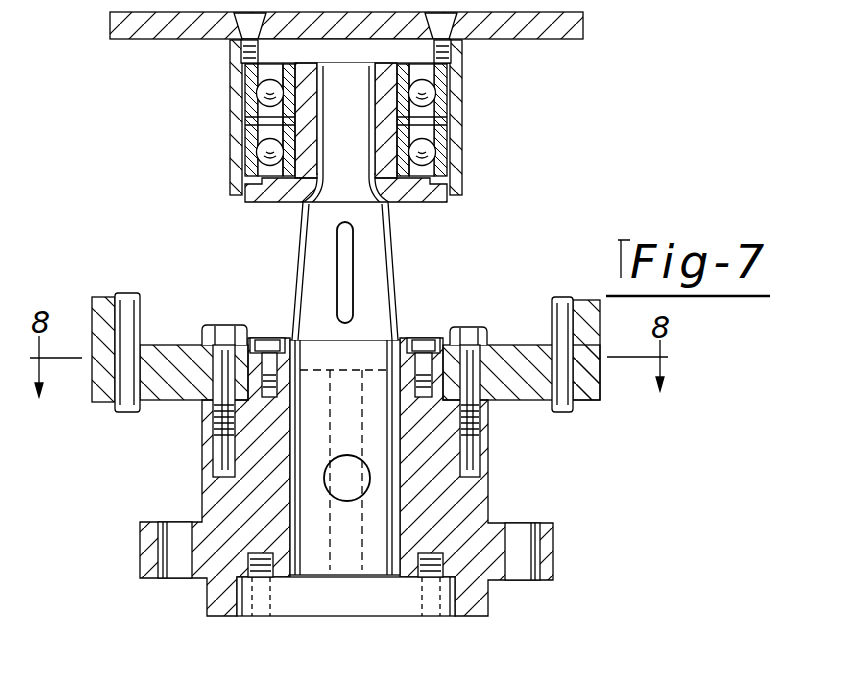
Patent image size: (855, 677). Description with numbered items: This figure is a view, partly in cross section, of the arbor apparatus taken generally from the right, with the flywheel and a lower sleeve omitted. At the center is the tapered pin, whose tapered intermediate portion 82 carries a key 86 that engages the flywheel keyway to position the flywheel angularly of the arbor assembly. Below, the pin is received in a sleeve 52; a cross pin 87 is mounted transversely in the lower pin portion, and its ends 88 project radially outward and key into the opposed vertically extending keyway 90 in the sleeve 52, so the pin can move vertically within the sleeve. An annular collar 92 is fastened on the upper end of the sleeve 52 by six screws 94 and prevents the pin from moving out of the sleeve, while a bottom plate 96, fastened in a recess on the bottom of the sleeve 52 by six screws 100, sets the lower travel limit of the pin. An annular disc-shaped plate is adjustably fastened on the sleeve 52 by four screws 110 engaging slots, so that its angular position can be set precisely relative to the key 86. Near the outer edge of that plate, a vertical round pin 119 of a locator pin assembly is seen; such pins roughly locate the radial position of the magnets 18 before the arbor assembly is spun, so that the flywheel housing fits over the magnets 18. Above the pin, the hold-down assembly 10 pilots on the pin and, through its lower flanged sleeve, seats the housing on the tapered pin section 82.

The bearing housing assembly 10 is at (524, 88).
The magnets 18 is at (93, 297).
The sleeve 52 is at (482, 503).
The tapered intermediate portion 82 is at (300, 265).
The key 86 is at (350, 265).
The cross pin 87 is at (370, 484).
The ends 88 is at (335, 470).
The keyway 90 is at (395, 442).
The annular collar 92 is at (290, 338).
The screws 94 is at (425, 338).
The bottom plate 96 is at (307, 600).
The screws 100 is at (440, 621).
The screws 110 is at (480, 327).
The vertical round pin 119 is at (113, 418).